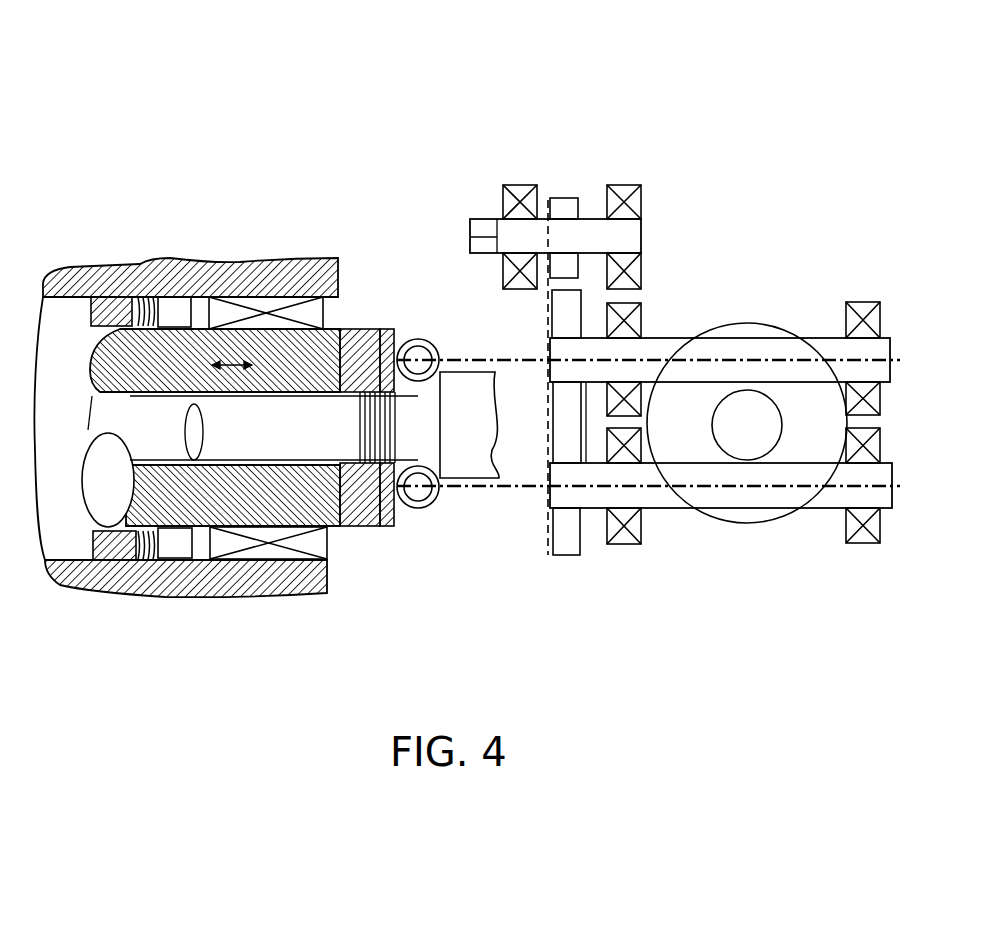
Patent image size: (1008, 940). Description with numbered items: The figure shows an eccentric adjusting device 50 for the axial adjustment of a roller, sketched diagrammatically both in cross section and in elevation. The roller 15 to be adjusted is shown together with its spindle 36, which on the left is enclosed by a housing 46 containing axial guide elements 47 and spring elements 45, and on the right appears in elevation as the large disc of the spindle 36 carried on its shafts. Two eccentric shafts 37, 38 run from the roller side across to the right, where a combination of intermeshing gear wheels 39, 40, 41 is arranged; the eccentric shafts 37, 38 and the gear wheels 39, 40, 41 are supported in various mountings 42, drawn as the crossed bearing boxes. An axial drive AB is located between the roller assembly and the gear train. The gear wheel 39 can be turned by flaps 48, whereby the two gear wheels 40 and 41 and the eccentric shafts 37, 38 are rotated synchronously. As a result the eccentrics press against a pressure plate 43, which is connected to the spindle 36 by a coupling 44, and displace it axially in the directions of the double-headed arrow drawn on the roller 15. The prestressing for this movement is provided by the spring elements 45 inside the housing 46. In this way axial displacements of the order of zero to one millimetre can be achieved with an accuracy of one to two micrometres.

The eccentric adjusting device 50 is at (400, 172).
The housing 46 is at (249, 266).
The spring elements 45 is at (145, 297).
The axial guide elements 47 is at (312, 312).
The roller 15 is at (340, 329).
The pressure plate 43 is at (352, 497).
The coupling 44 is at (380, 497).
The eccentric shaft 37 is at (418, 352).
The eccentric shaft 38 is at (418, 497).
The axial drive AB is at (481, 468).
The gear wheel 40 is at (548, 312).
The flaps 48 is at (480, 228).
The gear wheel 39 is at (557, 205).
The gear wheel 41 is at (570, 530).
The mountings 42 is at (622, 188).
The spindle 36 is at (275, 446).